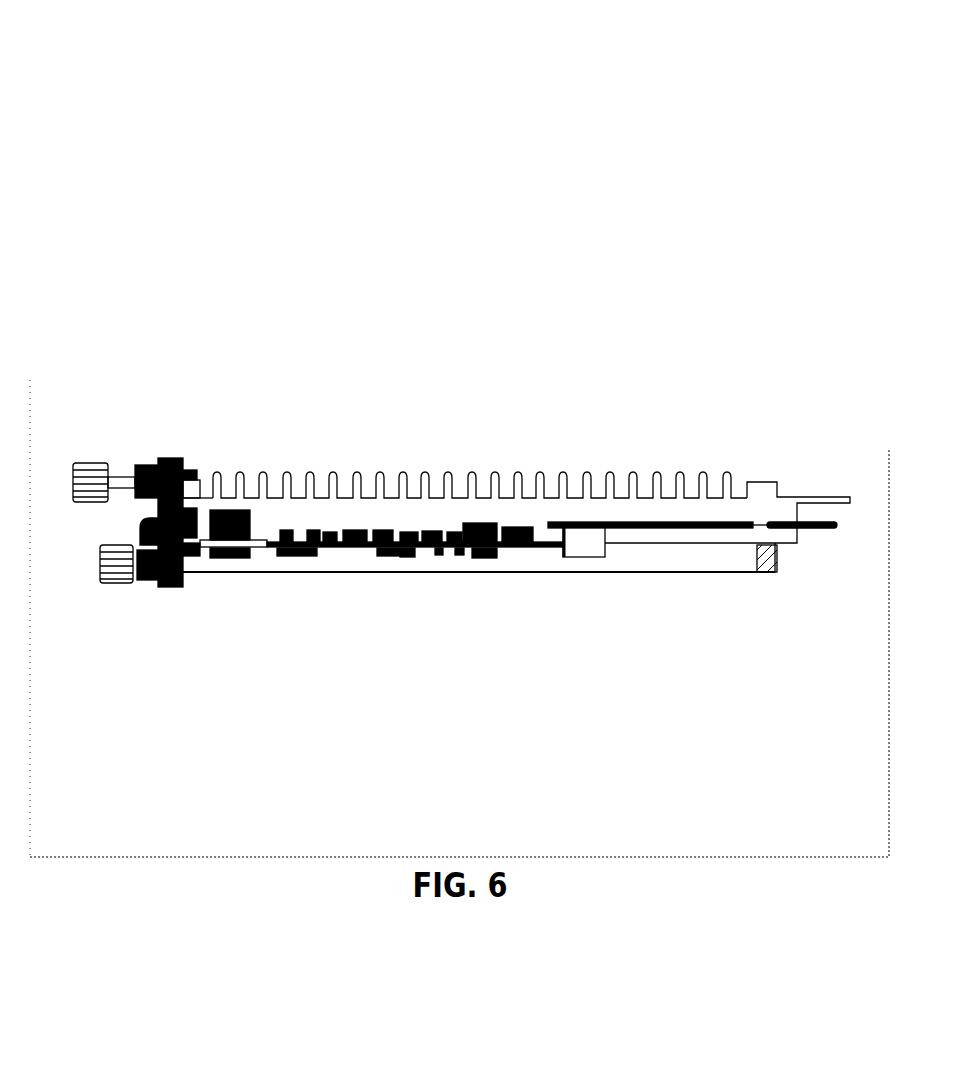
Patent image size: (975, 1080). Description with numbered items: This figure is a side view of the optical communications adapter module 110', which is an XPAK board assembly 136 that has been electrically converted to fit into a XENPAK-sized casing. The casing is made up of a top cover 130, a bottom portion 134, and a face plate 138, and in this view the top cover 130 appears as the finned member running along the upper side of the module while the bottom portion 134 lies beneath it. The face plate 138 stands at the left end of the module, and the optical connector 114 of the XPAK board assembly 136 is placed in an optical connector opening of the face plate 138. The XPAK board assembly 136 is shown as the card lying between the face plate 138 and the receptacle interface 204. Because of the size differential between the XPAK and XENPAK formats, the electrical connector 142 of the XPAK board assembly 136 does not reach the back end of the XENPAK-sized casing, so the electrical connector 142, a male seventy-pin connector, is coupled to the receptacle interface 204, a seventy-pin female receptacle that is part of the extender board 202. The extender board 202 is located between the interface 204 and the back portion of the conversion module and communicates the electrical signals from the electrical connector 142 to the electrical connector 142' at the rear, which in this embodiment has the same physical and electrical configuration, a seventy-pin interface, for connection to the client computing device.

The optical communications adapter module 110' is at (516, 347).
The top cover 130 is at (513, 506).
The face plate 138 is at (165, 460).
The optical connector 114 is at (195, 556).
The electrical connector 142 is at (488, 772).
The XPAK board assembly 136 is at (410, 557).
The extender board 202 is at (671, 525).
The electrical connector 142' is at (848, 766).
The receptacle interface 204 is at (583, 548).
The bottom portion 134 is at (698, 573).